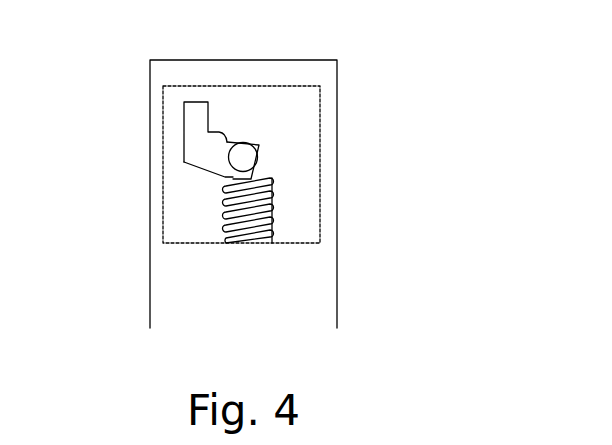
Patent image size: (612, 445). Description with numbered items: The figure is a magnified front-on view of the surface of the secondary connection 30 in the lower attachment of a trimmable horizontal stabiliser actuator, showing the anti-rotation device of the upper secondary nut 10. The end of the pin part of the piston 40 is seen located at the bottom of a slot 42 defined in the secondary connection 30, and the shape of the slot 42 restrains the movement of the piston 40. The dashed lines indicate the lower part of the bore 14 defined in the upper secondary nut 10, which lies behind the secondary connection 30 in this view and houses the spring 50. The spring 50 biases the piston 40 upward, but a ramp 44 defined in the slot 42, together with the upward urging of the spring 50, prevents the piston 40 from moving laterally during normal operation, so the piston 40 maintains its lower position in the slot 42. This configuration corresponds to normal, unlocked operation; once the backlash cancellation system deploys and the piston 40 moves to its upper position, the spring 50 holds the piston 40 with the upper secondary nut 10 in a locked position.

The upper secondary nut 10 is at (163, 232).
The vertical bore 14 is at (272, 201).
The secondary connection 30 is at (188, 310).
The piston 40 is at (228, 152).
The slot 42 is at (197, 117).
The ramp 44 is at (227, 141).
The spring 50 is at (226, 192).